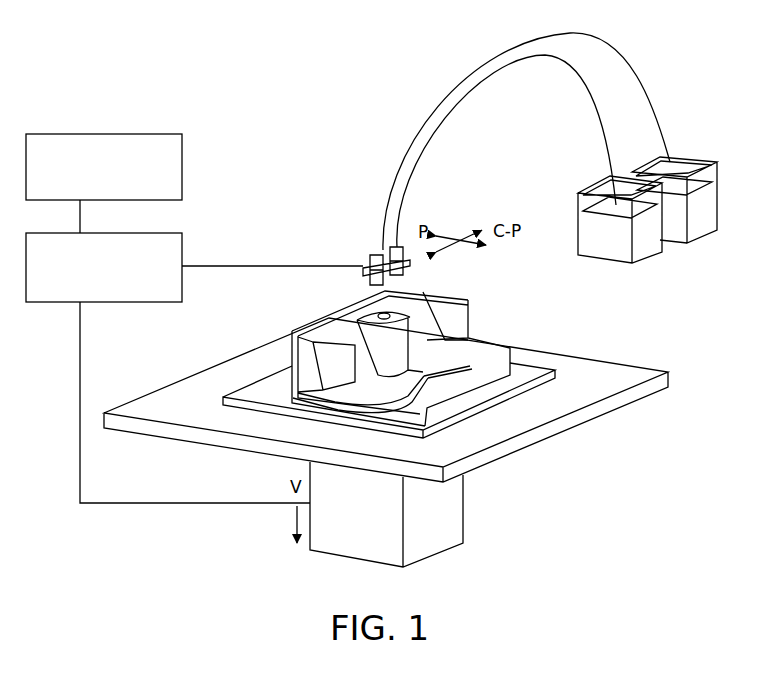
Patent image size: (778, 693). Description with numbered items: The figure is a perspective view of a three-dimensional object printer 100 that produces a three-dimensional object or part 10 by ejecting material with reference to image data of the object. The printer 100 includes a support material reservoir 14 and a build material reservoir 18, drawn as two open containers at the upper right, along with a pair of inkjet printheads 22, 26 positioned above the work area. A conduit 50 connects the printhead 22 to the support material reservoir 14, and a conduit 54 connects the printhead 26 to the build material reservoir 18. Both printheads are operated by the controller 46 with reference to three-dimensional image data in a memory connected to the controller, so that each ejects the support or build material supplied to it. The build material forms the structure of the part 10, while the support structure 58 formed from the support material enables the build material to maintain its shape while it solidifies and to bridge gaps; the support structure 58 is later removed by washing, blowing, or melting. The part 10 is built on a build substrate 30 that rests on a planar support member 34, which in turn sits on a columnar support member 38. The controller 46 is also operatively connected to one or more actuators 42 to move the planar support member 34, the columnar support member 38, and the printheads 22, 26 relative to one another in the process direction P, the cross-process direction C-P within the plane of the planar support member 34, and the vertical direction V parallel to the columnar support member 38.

The printer 100 is at (320, 105).
The three-dimensional object or part 10 is at (473, 360).
The support material reservoir 14 is at (646, 240).
The build material reservoir 18 is at (693, 232).
The inkjet printhead 22 is at (348, 281).
The inkjet printhead 26 is at (423, 274).
The build substrate 30 is at (480, 405).
The planar support member 34 is at (525, 455).
The columnar support member 38 is at (468, 531).
The actuator 42 is at (183, 247).
The controller 46 is at (183, 168).
The conduit 50 is at (597, 128).
The conduit 54 is at (628, 77).
The support structure 58 is at (476, 331).